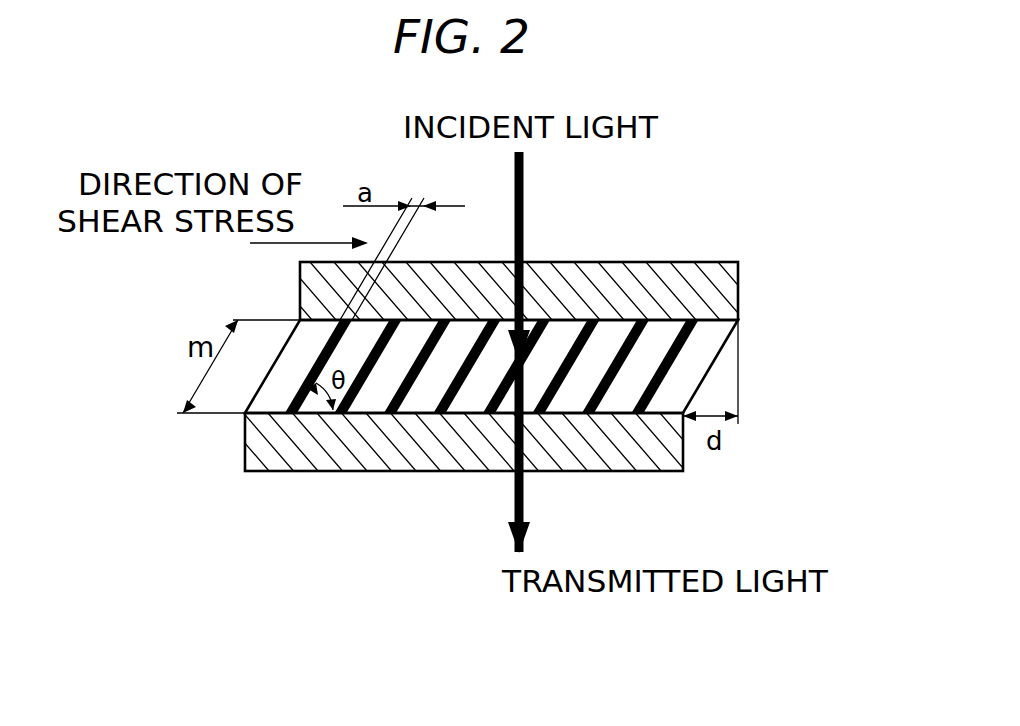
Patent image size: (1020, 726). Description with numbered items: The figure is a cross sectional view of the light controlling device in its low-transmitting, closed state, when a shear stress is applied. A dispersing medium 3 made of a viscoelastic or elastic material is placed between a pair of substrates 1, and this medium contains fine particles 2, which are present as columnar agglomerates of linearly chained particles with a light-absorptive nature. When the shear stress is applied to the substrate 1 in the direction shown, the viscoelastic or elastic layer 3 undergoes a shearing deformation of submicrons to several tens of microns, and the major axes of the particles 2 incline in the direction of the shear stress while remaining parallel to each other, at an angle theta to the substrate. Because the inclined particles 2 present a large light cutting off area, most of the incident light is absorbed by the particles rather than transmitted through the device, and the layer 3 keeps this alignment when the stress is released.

The substrate 1 is at (627, 265).
The fine particles 2 is at (382, 365).
The dispersing medium 3 is at (428, 395).